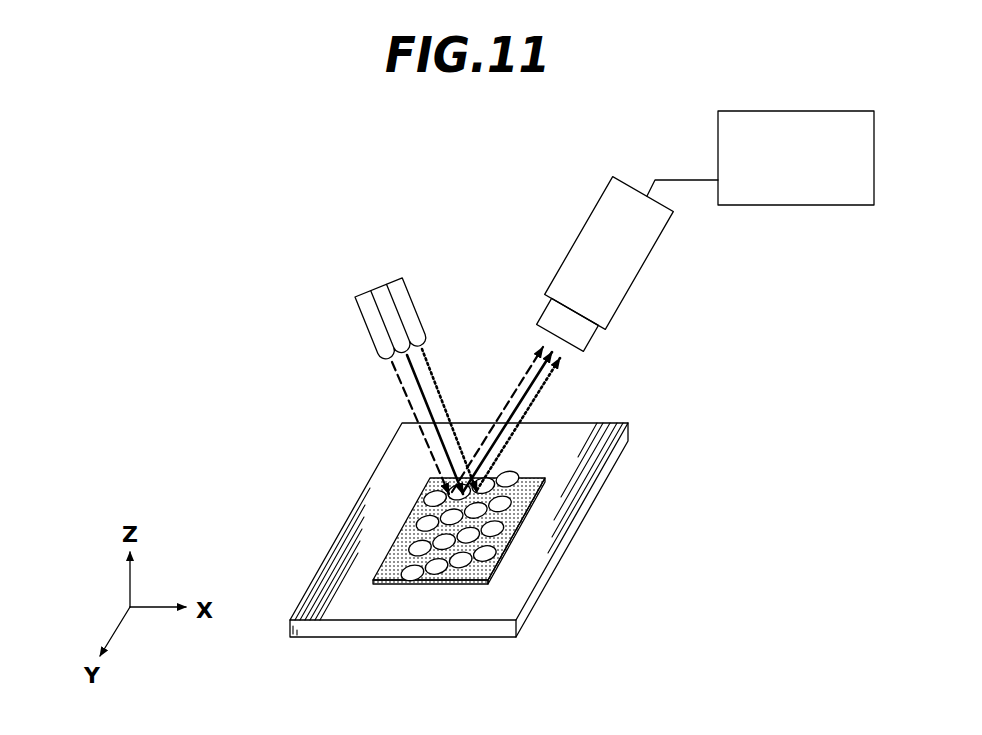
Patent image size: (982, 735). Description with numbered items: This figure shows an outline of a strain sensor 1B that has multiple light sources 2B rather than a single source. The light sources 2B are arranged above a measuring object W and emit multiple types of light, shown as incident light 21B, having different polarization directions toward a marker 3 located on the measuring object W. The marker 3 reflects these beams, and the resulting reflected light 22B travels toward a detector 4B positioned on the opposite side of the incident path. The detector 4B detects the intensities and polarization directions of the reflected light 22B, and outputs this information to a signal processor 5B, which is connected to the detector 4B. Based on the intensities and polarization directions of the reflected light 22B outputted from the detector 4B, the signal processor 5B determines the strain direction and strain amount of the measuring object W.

The strain sensor 1B is at (461, 209).
The light sources 2B is at (378, 340).
The incident light 21B is at (430, 373).
The reflected light 22B is at (523, 383).
The detector 4B is at (620, 277).
The signal processor 5B is at (802, 125).
The marker 3 is at (517, 532).
The measuring object W is at (523, 588).